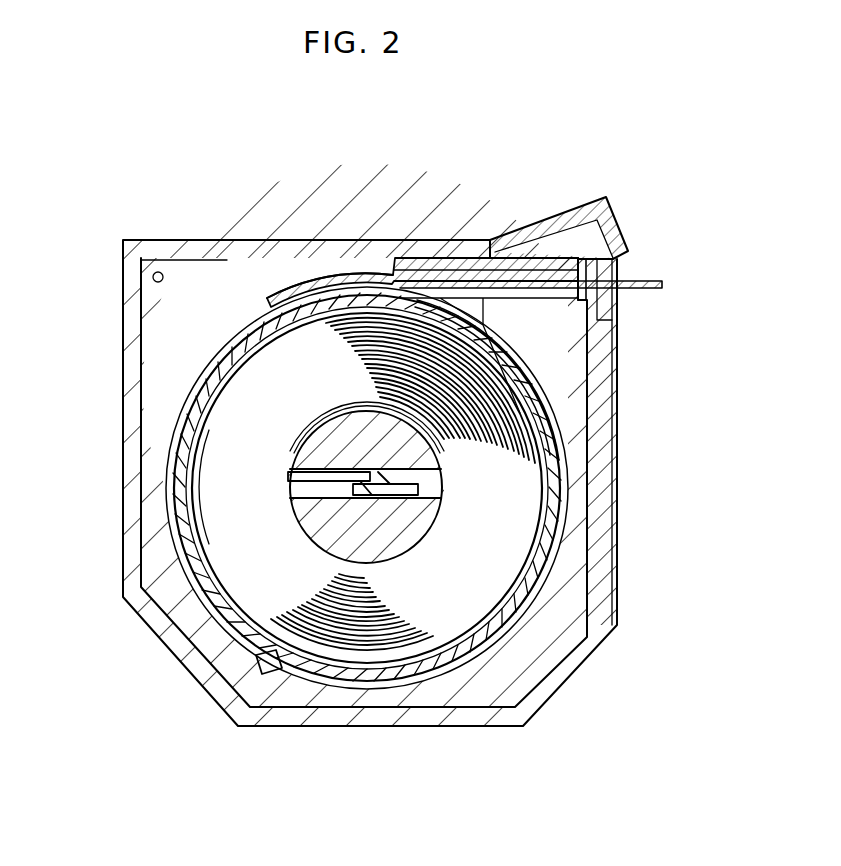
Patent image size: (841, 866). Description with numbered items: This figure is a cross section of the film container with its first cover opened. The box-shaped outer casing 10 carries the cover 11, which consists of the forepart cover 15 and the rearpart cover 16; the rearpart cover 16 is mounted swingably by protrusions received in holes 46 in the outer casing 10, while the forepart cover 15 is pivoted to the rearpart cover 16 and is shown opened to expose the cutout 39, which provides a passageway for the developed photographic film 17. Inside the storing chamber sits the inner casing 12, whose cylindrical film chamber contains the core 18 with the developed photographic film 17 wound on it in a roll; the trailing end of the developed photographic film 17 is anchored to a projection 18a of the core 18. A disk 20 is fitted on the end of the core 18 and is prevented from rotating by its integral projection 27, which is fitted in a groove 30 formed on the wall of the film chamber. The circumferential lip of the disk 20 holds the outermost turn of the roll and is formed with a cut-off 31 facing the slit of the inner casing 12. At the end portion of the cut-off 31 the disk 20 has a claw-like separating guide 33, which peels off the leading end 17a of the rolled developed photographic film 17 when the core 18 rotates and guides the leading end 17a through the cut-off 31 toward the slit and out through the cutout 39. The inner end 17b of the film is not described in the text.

The outer casing 10 is at (470, 727).
The cover 11 is at (470, 240).
The inner casing 12 is at (562, 628).
The forepart cover 15 is at (578, 200).
The rearpart cover 16 is at (214, 240).
The developed photographic film 17 is at (240, 545).
The leading end 17a is at (645, 298).
The spring inner end 17b is at (290, 476).
The core 18 is at (410, 530).
The projection 18a is at (343, 412).
The disk 20 is at (178, 455).
The projection 27 is at (285, 668).
The groove 30 is at (262, 662).
The cut-off 31 is at (347, 280).
The separating guide 33 is at (417, 275).
The cutout 39 is at (625, 270).
The hole 46 is at (122, 281).